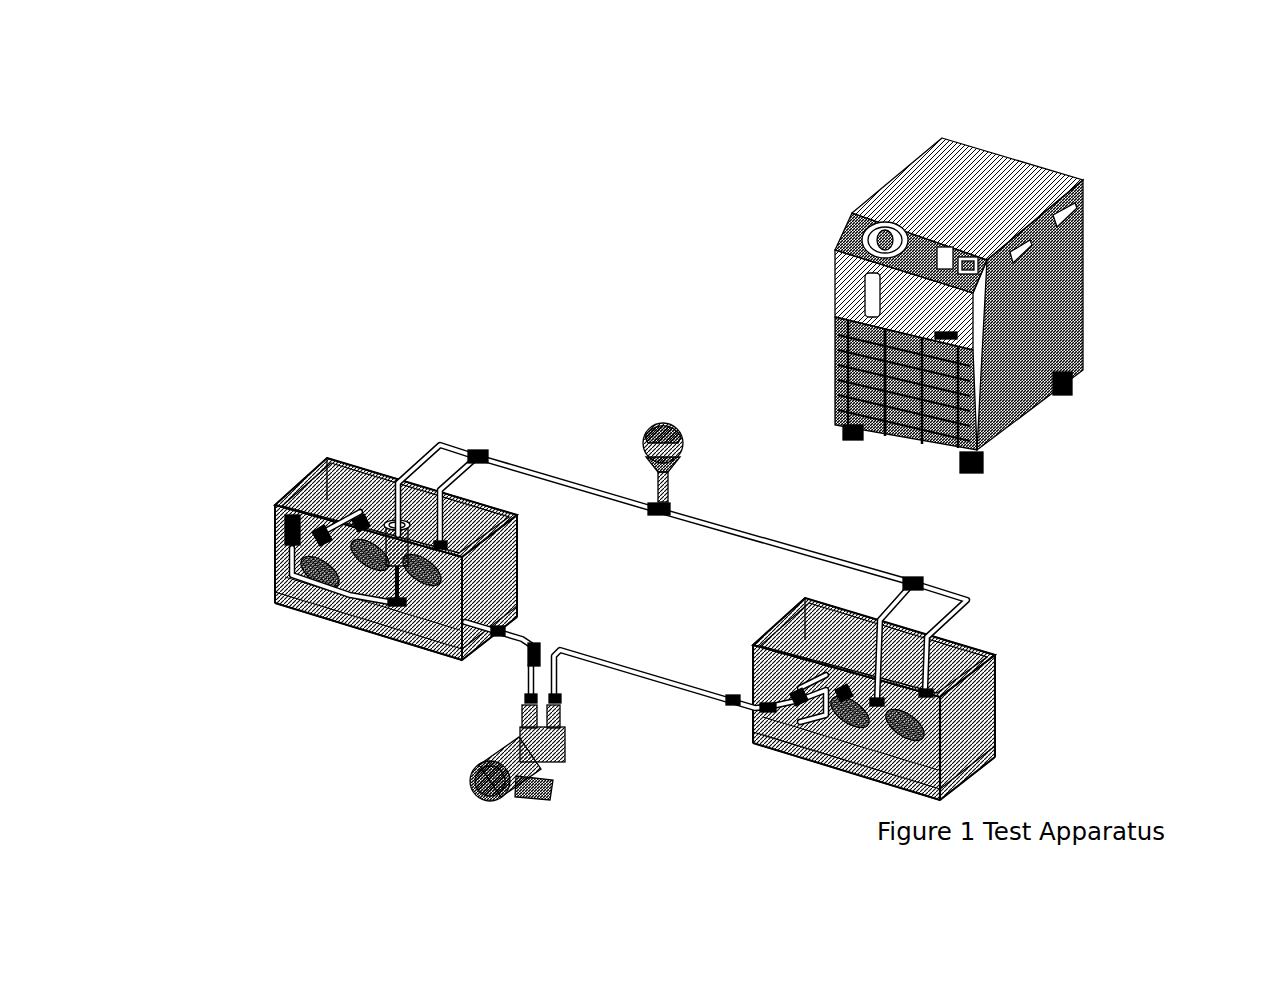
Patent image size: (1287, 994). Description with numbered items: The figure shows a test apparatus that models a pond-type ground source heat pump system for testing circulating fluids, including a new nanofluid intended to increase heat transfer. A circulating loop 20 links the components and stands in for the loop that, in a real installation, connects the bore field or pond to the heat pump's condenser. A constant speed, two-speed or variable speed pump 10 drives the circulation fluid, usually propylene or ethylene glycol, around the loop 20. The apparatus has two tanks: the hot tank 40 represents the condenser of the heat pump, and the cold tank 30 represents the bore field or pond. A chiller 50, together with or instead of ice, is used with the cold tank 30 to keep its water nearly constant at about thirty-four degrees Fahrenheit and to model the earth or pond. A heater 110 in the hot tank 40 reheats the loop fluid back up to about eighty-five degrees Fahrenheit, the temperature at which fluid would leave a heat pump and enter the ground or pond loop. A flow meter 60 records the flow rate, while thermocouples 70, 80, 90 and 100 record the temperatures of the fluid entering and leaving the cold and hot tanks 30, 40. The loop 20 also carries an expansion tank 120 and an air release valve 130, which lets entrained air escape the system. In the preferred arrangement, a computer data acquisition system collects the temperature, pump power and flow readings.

The pump 10 is at (755, 901).
The circulating loop 20 is at (1200, 544).
The cold tank 30 is at (1010, 675).
The hot tank 40 is at (379, 456).
The chiller 50 is at (982, 187).
The flow meter 60 is at (526, 652).
The thermocouple 70 is at (499, 640).
The thermocouple 80 is at (496, 445).
The thermocouple 90 is at (957, 580).
The thermocouple 100 is at (733, 710).
The heater 110 is at (270, 540).
The expansion tank 120 is at (697, 337).
The air release valve 130 is at (345, 505).